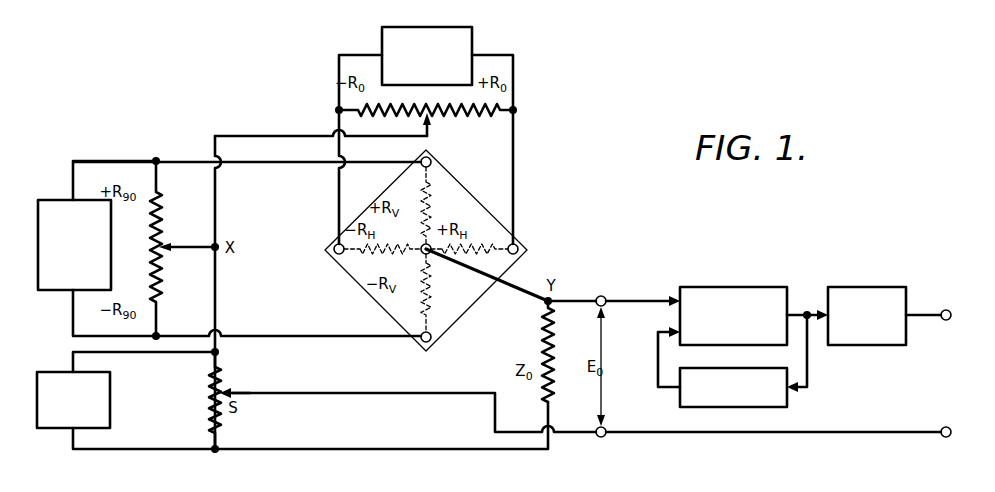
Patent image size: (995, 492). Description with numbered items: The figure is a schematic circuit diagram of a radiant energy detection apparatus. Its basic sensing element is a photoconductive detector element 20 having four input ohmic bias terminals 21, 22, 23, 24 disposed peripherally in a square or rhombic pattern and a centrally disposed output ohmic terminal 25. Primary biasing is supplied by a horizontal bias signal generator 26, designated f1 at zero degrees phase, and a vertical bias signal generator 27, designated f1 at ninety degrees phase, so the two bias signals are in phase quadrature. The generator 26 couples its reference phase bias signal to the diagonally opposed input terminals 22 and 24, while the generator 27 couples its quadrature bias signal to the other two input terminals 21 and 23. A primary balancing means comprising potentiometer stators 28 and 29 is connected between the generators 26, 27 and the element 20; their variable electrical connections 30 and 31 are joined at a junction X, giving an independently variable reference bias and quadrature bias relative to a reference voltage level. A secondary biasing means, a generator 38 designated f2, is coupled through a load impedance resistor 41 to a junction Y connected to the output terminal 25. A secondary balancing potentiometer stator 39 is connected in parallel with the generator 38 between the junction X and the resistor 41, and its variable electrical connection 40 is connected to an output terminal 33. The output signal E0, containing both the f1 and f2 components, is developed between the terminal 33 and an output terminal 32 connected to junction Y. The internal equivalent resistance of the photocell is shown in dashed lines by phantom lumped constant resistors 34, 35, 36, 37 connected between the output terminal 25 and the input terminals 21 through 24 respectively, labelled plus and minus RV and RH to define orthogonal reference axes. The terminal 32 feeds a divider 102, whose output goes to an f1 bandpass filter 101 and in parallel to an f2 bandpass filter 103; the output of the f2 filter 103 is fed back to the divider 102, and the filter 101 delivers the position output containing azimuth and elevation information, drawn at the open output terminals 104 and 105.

The photoconductive detector element 20 is at (457, 193).
The input ohmic bias terminal 21 is at (432, 163).
The input ohmic bias terminal 22 is at (518, 247).
The input ohmic bias terminal 23 is at (432, 340).
The input ohmic bias terminal 24 is at (328, 255).
The output ohmic terminal 25 is at (428, 253).
The horizontal bias signal generator 26 is at (465, 47).
The vertical bias signal generator 27 is at (60, 290).
The potentiometer stator 28 is at (467, 116).
The potentiometer stator 29 is at (162, 227).
The variable electrical connection 30 is at (430, 120).
The variable electrical connection 31 is at (162, 248).
The output terminal 32 is at (606, 296).
The output terminal 33 is at (605, 437).
The phantom lumped constant resistor 34 is at (438, 193).
The phantom lumped constant resistor 35 is at (490, 252).
The phantom lumped constant resistor 36 is at (423, 302).
The phantom lumped constant resistor 37 is at (400, 255).
The secondary bias signal generator 38 is at (102, 398).
The potentiometer stator 39 is at (210, 410).
The variable electrical connection 40 is at (230, 388).
The load impedance resistor 41 is at (545, 335).
The f1 bandpass filter 101 is at (887, 292).
The divider 102 is at (760, 292).
The f2 bandpass filter 103 is at (763, 402).
The output terminal 104 is at (944, 322).
The output terminal 105 is at (942, 440).